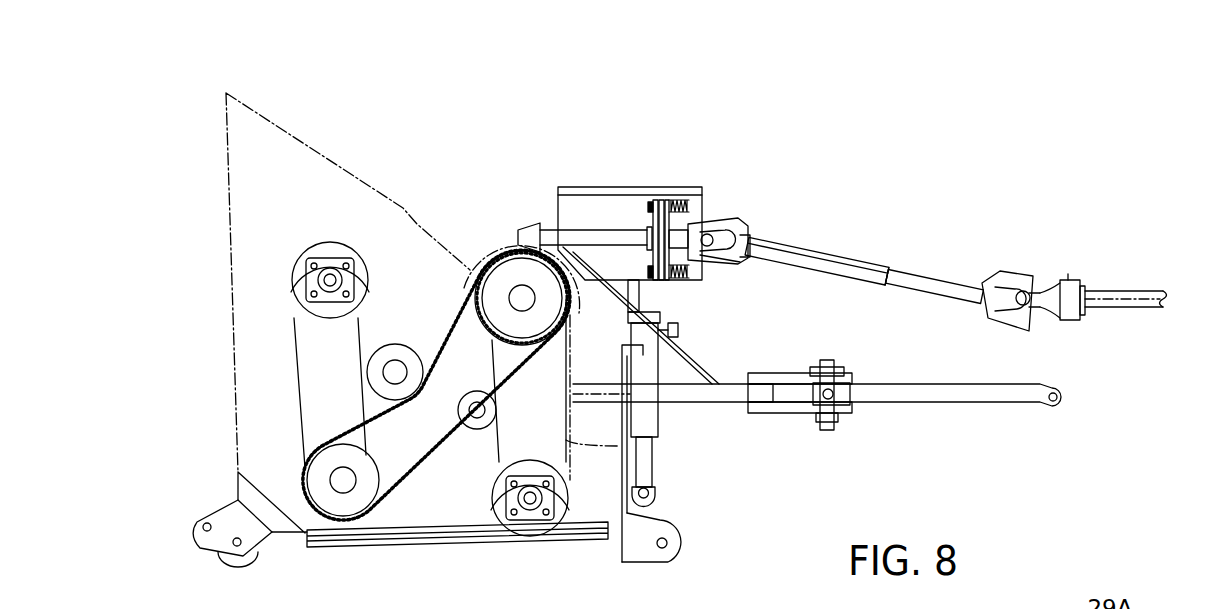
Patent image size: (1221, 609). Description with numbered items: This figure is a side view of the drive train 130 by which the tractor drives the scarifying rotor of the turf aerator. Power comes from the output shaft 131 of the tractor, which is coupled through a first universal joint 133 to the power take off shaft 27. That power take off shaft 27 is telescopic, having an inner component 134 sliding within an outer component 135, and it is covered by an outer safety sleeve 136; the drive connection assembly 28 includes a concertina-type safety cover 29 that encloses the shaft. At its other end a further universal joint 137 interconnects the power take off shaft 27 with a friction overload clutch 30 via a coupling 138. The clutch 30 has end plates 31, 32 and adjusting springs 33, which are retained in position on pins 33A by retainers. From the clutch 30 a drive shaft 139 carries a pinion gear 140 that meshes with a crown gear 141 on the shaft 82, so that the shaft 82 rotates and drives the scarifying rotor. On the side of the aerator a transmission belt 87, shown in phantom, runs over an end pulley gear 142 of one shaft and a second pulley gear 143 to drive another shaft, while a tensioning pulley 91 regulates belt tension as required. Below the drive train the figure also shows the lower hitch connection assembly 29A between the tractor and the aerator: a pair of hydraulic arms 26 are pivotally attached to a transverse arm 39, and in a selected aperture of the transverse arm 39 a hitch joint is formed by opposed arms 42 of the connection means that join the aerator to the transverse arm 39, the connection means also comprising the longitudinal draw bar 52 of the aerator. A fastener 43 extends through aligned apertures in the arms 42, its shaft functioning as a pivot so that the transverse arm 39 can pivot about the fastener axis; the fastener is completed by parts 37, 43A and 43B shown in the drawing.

The hydraulic arms 26 is at (973, 398).
The power take off shaft 27 is at (899, 280).
The drive connection assembly 28 is at (973, 236).
The safety cover 29 is at (741, 264).
The lower hitch connection assembly 29A is at (832, 446).
The clutch 30 is at (632, 219).
The end plate 31 is at (655, 256).
The end plate 32 is at (720, 262).
The adjusting springs 33 is at (683, 278).
The pins 33A is at (679, 202).
The coupling disc 37 is at (655, 198).
The transverse arm 39 is at (810, 396).
The opposed arms 42 is at (790, 373).
The fastener 43 is at (834, 358).
The upper nut 43A is at (855, 372).
The lower nut 43B is at (840, 420).
The draw bar 52 is at (680, 398).
The shaft 82 is at (481, 283).
The transmission belt 87 is at (430, 453).
The tensioning pulley 91 is at (372, 364).
The drive train 130 is at (785, 172).
The output shaft 131 is at (1117, 293).
The first universal joint 133 is at (1012, 278).
The inner component 134 is at (928, 284).
The outer component 135 is at (820, 258).
The outer safety sleeve 136 is at (882, 265).
The universal joint 137 is at (752, 222).
The coupling 138 is at (692, 220).
The drive shaft 139 is at (540, 224).
The pinion gear 140 is at (502, 258).
The crown gear 141 is at (478, 274).
The pulley gear 142 is at (495, 302).
The pulley gear 143 is at (342, 497).